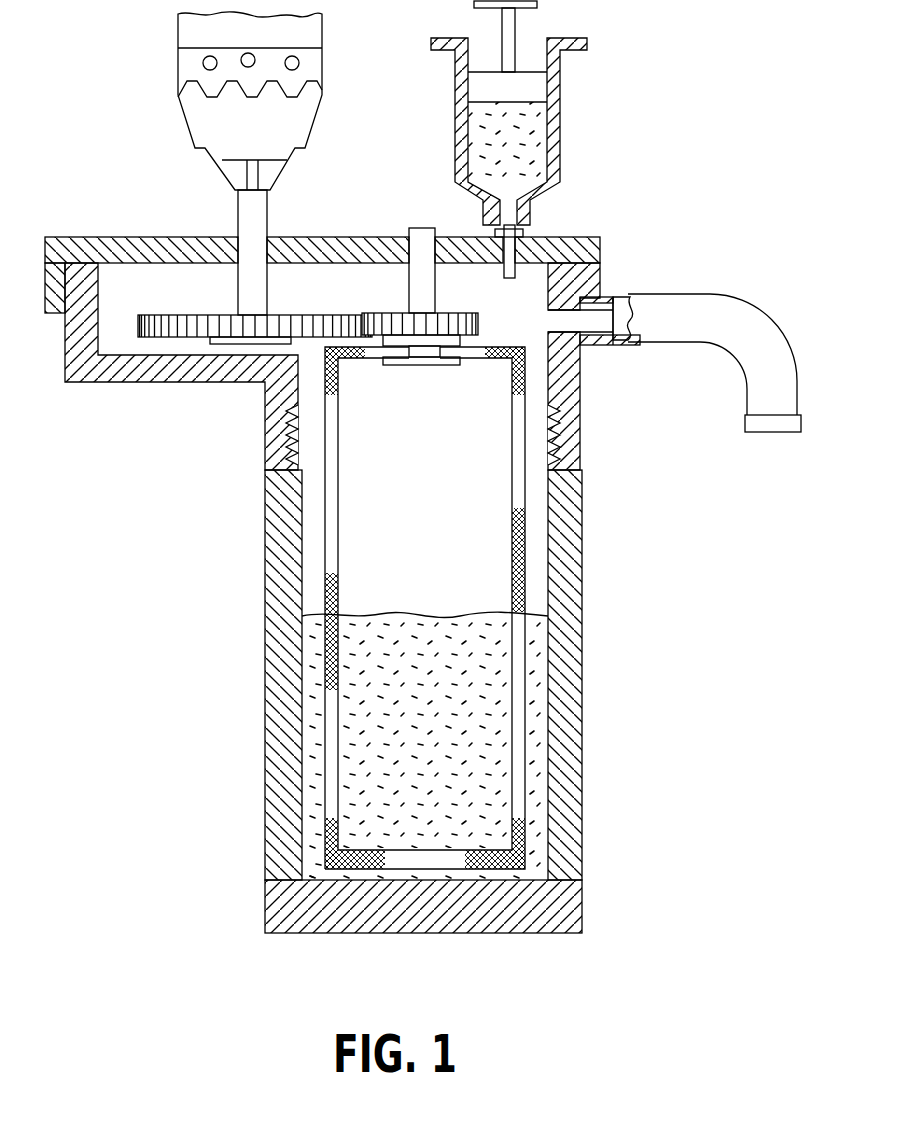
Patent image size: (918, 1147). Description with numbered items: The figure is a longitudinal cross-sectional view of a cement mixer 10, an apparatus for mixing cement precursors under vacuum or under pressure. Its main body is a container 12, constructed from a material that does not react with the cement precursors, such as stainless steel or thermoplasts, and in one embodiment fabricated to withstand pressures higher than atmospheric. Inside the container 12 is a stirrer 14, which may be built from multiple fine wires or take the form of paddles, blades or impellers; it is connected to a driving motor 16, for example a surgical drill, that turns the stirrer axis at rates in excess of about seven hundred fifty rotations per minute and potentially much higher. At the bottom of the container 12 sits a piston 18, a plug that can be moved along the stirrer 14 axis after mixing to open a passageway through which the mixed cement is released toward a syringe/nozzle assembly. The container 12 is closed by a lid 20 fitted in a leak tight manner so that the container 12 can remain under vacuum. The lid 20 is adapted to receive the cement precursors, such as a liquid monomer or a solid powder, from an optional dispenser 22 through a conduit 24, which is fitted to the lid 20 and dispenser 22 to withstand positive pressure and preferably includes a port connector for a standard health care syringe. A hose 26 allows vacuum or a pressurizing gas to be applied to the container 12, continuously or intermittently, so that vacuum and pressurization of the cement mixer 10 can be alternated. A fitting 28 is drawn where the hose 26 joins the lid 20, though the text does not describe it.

The cement mixer 10 is at (694, 188).
The container 12 is at (563, 713).
The stirrer 14 is at (522, 543).
The driving motor 16 is at (198, 128).
The piston 18 is at (483, 921).
The lid 20 is at (140, 372).
The dispenser 22 is at (558, 100).
The conduit 24 is at (530, 232).
The hose 26 is at (749, 322).
The fitting 28 is at (622, 296).